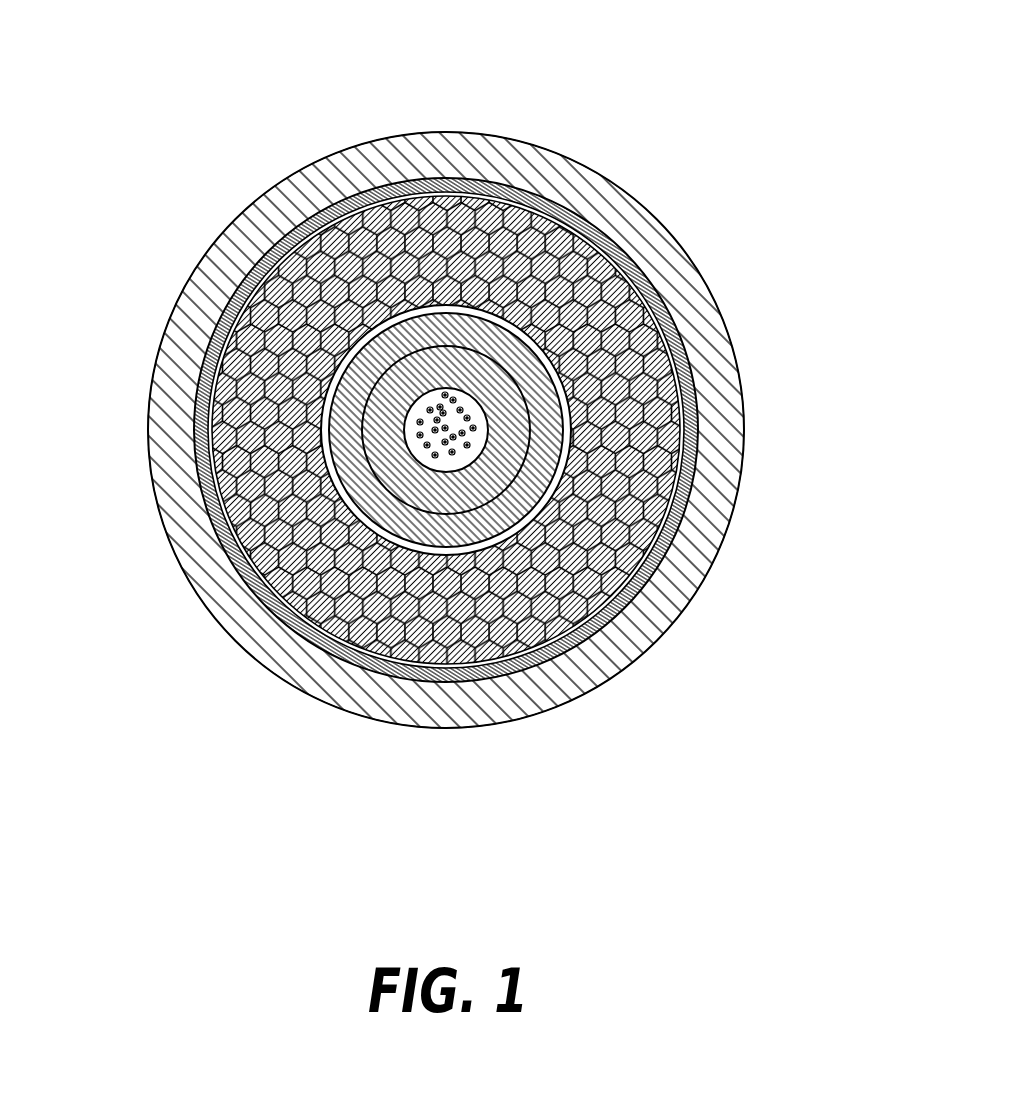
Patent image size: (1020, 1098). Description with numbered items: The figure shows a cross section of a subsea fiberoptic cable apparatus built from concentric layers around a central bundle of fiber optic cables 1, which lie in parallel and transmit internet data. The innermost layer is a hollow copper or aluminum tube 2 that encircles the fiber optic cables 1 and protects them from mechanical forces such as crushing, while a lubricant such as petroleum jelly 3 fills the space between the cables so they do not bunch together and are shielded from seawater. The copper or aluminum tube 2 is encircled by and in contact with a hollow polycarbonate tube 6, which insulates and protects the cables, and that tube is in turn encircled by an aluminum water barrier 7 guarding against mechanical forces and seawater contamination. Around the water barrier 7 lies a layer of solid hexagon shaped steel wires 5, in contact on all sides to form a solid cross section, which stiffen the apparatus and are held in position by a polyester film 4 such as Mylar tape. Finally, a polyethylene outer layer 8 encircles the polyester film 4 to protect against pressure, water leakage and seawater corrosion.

The fiber optic cables 1 is at (460, 390).
The copper or aluminum tube 2 is at (653, 477).
The petroleum jelly 3 is at (397, 355).
The polyester film 4 is at (692, 362).
The polygon shaped steel wires 5 is at (398, 205).
The polycarbonate tube 6 is at (387, 510).
The aluminum water barrier 7 is at (500, 537).
The polyethylene outer layer 8 is at (653, 252).